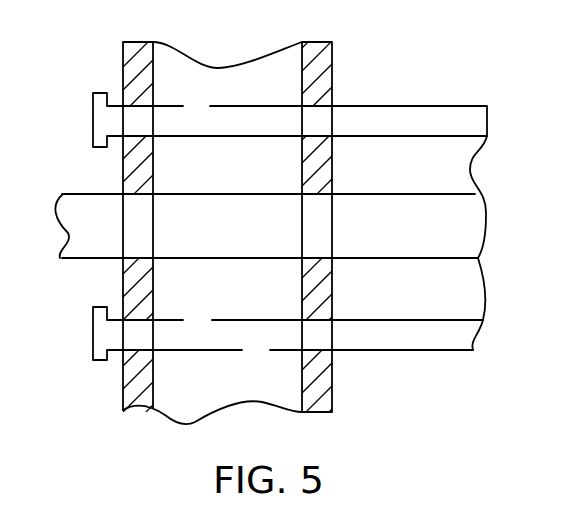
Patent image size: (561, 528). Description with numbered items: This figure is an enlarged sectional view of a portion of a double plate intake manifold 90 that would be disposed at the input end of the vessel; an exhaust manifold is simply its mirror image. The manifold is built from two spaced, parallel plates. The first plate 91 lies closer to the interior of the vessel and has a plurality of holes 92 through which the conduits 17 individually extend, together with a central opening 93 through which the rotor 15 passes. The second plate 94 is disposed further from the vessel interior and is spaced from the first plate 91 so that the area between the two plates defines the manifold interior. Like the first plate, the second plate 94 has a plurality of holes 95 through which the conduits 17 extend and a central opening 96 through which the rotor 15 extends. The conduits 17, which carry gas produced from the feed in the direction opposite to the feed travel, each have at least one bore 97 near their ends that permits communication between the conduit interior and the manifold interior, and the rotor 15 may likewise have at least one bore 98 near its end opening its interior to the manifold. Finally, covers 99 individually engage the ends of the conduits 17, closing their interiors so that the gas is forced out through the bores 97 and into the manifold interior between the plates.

The tube and header assembly 90 is at (242, 40).
The first plate 91 is at (332, 66).
The holes 92 is at (332, 106).
The central opening 93 is at (332, 259).
The second plate 94 is at (133, 393).
The holes 95 is at (122, 314).
The central opening 96 is at (122, 193).
The bore 97 is at (200, 106).
The bore 98 is at (190, 193).
The covers 99 is at (104, 93).
The rotor 15 is at (463, 197).
The conduits 17 is at (448, 340).